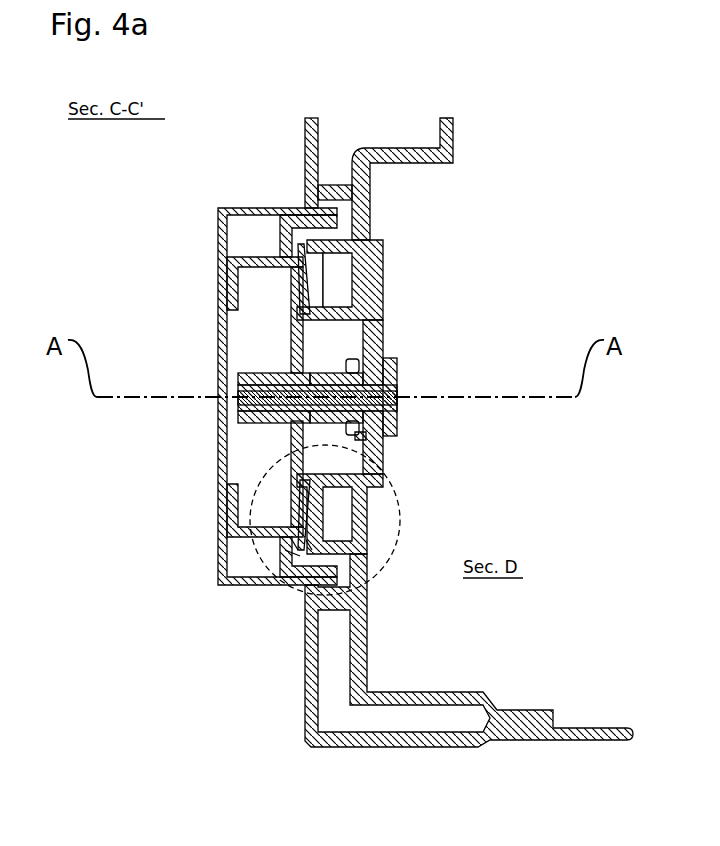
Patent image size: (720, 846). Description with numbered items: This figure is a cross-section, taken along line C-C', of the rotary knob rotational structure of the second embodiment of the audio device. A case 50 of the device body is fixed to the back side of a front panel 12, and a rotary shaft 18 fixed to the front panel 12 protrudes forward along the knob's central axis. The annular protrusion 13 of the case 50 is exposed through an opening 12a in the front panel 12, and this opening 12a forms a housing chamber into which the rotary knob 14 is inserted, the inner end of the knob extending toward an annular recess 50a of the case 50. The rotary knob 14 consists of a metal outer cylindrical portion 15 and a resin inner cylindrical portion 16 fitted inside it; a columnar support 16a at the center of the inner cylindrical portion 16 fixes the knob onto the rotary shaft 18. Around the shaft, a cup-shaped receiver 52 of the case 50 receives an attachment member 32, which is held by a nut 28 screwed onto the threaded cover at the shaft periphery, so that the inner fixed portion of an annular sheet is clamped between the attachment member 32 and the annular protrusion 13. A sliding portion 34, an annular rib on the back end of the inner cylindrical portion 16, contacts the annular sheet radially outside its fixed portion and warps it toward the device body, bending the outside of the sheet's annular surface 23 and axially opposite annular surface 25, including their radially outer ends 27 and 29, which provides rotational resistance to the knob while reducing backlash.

The front panel 12 is at (306, 122).
The opening 12a is at (302, 205).
The annular protrusion 13 is at (287, 583).
The rotary knob 14 is at (218, 225).
The outer cylindrical portion 15 is at (255, 210).
The inner cylindrical portion 16 is at (270, 535).
The columnar support 16a is at (262, 373).
The rotary shaft 18 is at (273, 415).
The annular surface 23 is at (300, 532).
The annular surface 25 is at (296, 548).
The radially outer end 27 is at (312, 548).
The nut 28 is at (355, 422).
The radially outer end 29 is at (300, 552).
The attachment member 32 is at (400, 330).
The sliding portion 34 is at (300, 262).
The case 50 is at (378, 318).
The annular recess 50a is at (343, 172).
The cup-shaped receiver 52 is at (348, 356).